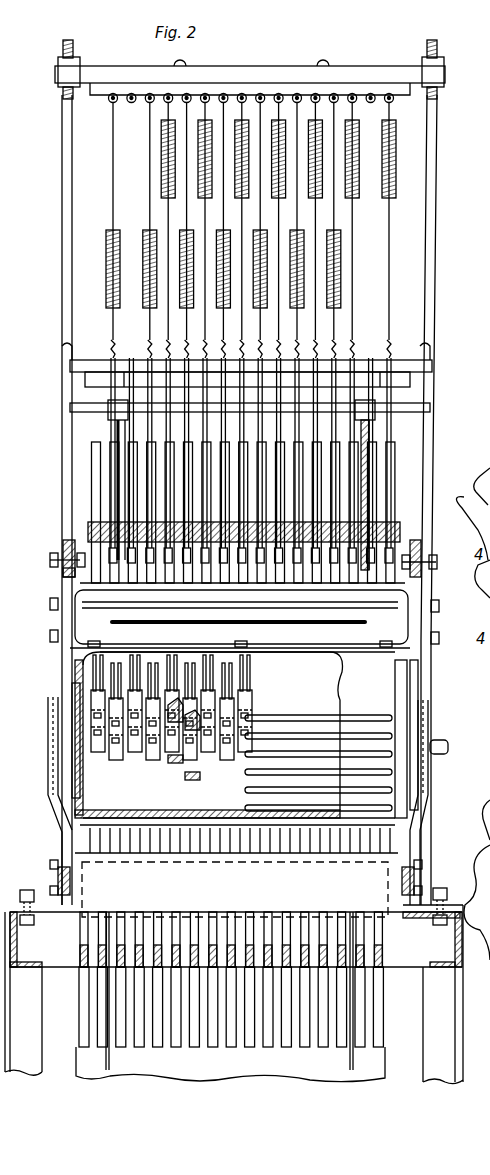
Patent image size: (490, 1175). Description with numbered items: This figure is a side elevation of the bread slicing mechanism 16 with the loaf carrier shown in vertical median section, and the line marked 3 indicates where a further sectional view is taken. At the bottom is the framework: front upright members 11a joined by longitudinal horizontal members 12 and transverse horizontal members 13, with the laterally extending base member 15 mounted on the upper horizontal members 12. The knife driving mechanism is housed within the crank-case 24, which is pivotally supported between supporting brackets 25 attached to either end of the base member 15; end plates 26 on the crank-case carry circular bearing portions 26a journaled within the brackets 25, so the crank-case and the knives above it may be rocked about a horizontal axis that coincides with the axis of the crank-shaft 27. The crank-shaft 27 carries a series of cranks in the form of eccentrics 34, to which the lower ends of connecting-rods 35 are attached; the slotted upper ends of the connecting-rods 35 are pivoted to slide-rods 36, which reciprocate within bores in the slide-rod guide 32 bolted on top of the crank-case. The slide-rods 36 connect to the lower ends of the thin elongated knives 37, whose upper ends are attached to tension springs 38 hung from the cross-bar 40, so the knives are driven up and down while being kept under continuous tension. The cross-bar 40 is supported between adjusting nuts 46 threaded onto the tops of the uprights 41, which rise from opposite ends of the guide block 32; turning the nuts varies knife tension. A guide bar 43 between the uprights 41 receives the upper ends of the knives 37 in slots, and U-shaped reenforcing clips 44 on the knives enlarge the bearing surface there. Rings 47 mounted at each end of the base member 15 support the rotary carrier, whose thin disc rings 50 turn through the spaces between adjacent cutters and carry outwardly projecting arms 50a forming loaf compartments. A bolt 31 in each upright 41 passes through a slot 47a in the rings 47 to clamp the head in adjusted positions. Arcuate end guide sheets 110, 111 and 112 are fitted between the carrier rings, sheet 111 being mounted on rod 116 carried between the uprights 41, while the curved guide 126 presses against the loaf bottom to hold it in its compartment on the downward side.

The section line 3- 3 is at (253, 115).
The cross-bar 40 is at (300, 70).
The adjusting nuts 46 is at (55, 85).
The uprights 41 is at (62, 240).
The tension springs 38 is at (335, 262).
The reenforcing clips 44 is at (365, 362).
The guide bar 43 is at (405, 385).
The rod 116 is at (70, 405).
The arcuate sheet 111 is at (120, 460).
The arcuate sheet 110 is at (130, 488).
The disc rings 50 is at (340, 460).
The slicing mechanism 16 is at (432, 452).
The knives 37 is at (290, 493).
The slide-rod guide 32 is at (241, 615).
The slide-rods 36 is at (157, 577).
The rings 47 is at (68, 540).
The bolt 31 is at (50, 560).
The slots 47a is at (65, 578).
The crank-case 24 is at (240, 750).
The crank-shaft 27 is at (87, 775).
The eccentric 34 is at (175, 765).
The connecting-rods 35 is at (197, 782).
The end plates 26 is at (70, 690).
The supporting brackets 25 is at (58, 826).
The circular bearing portions 26a is at (48, 762).
The base member 15 is at (235, 889).
The transverse horizontal members 13 is at (402, 960).
The longitudinal horizontal members 12 is at (30, 968).
The front upright members 11a is at (32, 1072).
The arcuate sheet 112 is at (108, 1070).
The guide 126 is at (296, 1078).
The outwardly projecting arms 50a is at (212, 1045).